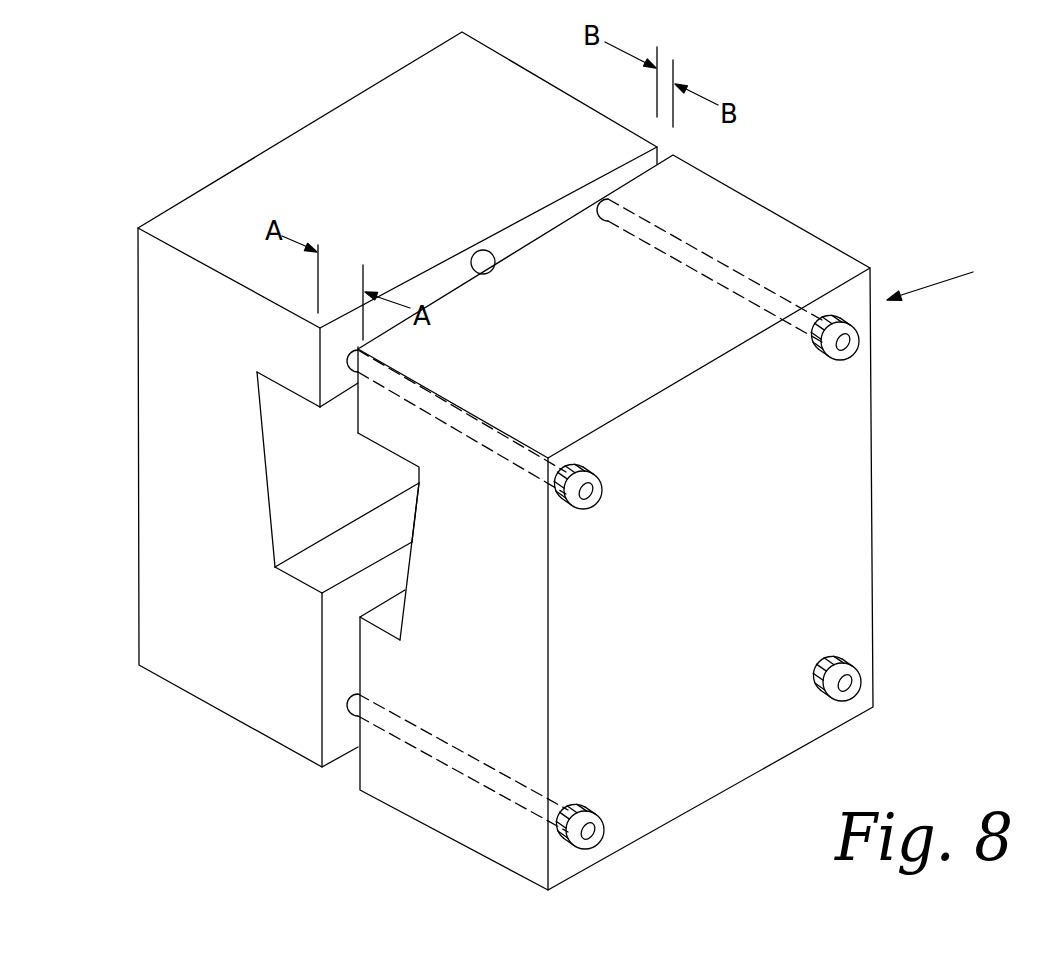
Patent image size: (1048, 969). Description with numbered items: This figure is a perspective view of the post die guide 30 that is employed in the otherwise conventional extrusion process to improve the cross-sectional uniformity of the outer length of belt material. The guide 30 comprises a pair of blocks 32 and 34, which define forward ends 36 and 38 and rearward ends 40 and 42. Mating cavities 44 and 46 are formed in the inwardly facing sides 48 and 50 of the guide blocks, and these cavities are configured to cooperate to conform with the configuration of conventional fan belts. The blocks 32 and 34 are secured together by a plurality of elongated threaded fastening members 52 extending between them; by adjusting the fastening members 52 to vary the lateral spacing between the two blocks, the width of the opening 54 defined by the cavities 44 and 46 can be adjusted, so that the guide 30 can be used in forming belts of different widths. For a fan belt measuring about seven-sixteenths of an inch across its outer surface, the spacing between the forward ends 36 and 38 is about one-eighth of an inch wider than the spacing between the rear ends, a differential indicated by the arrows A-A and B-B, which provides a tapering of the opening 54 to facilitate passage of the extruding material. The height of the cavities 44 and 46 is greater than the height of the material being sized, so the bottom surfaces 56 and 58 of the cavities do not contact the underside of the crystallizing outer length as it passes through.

The post die guide 30 is at (956, 272).
The guide block 32 is at (822, 465).
The guide block 34 is at (387, 125).
The forward end 36 is at (445, 682).
The forward end 38 is at (187, 415).
The rearward end 40 is at (873, 387).
The rearward end 42 is at (494, 50).
The mating cavity 44 is at (392, 525).
The mating cavity 46 is at (300, 467).
The inwardly facing side 48 is at (491, 271).
The inwardly facing side 50 is at (336, 343).
The elongated threaded fastening members 52 is at (722, 262).
The opening 54 is at (350, 490).
The bottom surface 56 is at (386, 621).
The bottom surface 58 is at (330, 567).